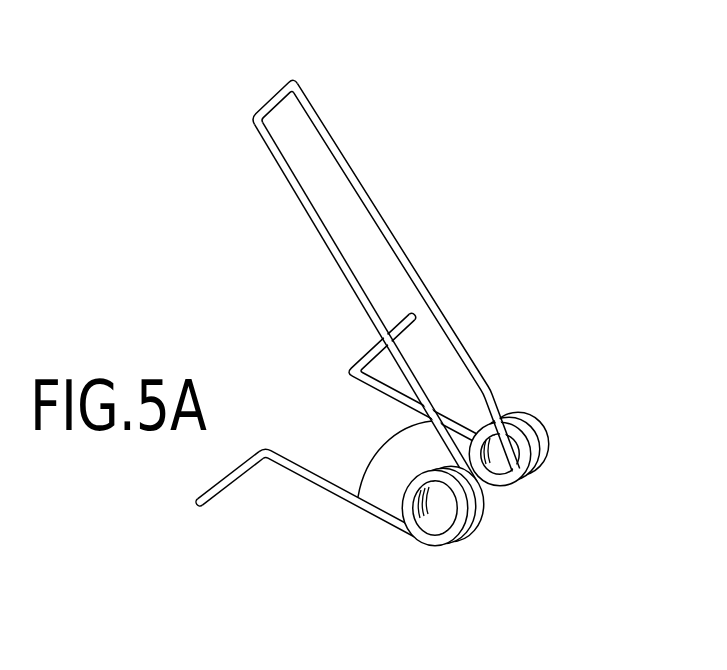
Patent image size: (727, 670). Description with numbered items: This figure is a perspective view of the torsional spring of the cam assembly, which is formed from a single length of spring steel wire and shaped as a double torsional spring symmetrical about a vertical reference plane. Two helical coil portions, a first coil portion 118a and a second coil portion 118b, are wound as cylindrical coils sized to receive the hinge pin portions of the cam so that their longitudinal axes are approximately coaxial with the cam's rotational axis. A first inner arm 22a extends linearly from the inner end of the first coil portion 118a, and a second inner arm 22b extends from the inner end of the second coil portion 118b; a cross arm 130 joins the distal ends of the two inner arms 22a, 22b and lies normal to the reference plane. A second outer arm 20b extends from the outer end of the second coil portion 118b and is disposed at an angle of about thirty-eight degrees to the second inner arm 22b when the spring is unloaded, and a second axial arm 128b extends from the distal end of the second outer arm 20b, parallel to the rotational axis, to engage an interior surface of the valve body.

The cross arm 130 is at (265, 100).
The first inner arm 22a is at (393, 230).
The second inner arm 22b is at (328, 248).
The first coil portion 118a is at (540, 466).
The second coil portion 118b is at (468, 538).
The second outer arm 20b is at (337, 497).
The second axial arm 128b is at (232, 489).